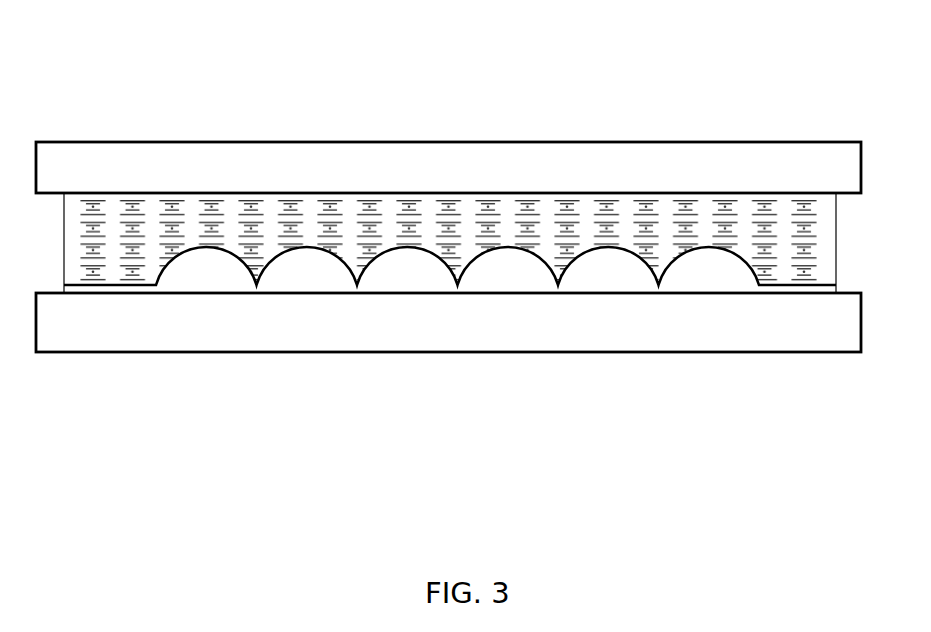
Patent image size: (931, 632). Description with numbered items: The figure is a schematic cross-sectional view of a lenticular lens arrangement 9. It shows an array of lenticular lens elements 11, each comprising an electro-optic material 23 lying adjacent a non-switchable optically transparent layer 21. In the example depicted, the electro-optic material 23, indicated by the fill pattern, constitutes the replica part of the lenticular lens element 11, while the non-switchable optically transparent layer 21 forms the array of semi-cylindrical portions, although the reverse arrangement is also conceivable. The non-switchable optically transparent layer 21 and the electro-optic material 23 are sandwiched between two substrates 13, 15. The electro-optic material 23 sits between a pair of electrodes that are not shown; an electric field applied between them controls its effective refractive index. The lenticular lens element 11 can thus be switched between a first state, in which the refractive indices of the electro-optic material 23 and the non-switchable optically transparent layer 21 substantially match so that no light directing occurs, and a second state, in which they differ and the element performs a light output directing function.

The lenticular lens arrangement 9 is at (443, 236).
The lenticular lens element 11 is at (602, 247).
The substrate 13 is at (128, 163).
The substrate 15 is at (128, 338).
The non-switchable optically transparent layer 21 is at (710, 270).
The electro-optic material 23 is at (720, 208).